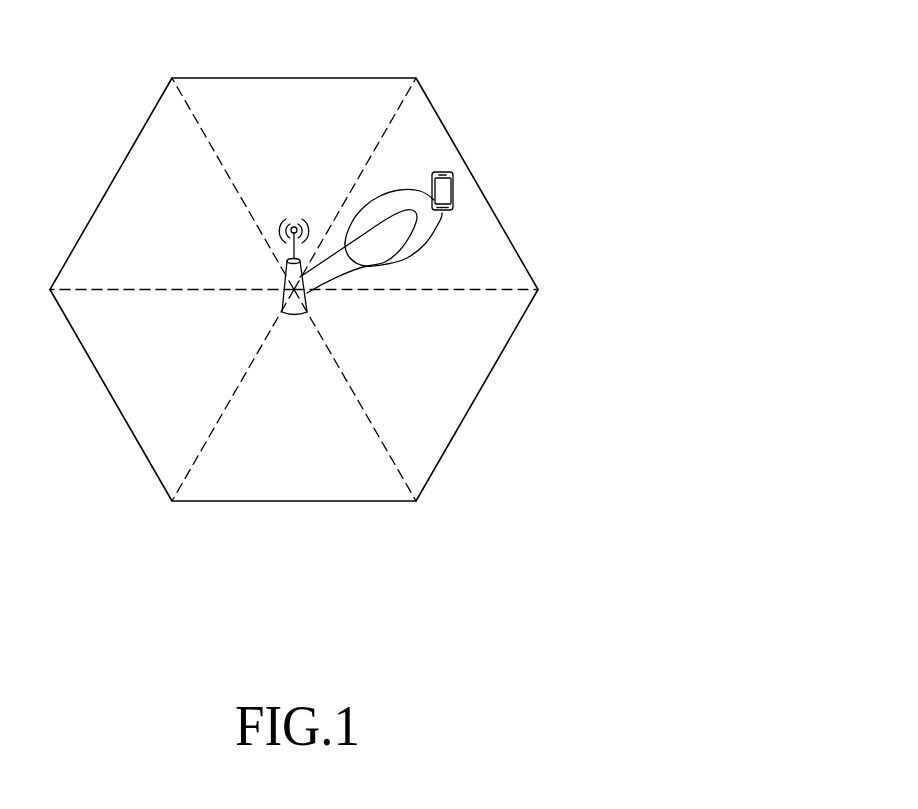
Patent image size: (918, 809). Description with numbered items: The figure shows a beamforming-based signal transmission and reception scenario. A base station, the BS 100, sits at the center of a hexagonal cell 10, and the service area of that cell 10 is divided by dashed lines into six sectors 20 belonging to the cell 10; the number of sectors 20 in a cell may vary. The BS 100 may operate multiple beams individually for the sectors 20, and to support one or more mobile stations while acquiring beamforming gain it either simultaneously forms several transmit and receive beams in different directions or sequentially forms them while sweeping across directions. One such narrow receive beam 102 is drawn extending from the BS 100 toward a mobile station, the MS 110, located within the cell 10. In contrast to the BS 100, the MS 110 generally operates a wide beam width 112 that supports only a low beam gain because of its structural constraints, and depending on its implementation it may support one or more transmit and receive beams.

The cell 10 is at (293, 78).
The sector 20 is at (125, 188).
The BS 100 is at (290, 315).
The MS 110 is at (440, 172).
The beam width 112 is at (427, 228).
The receive beam 102 is at (347, 270).